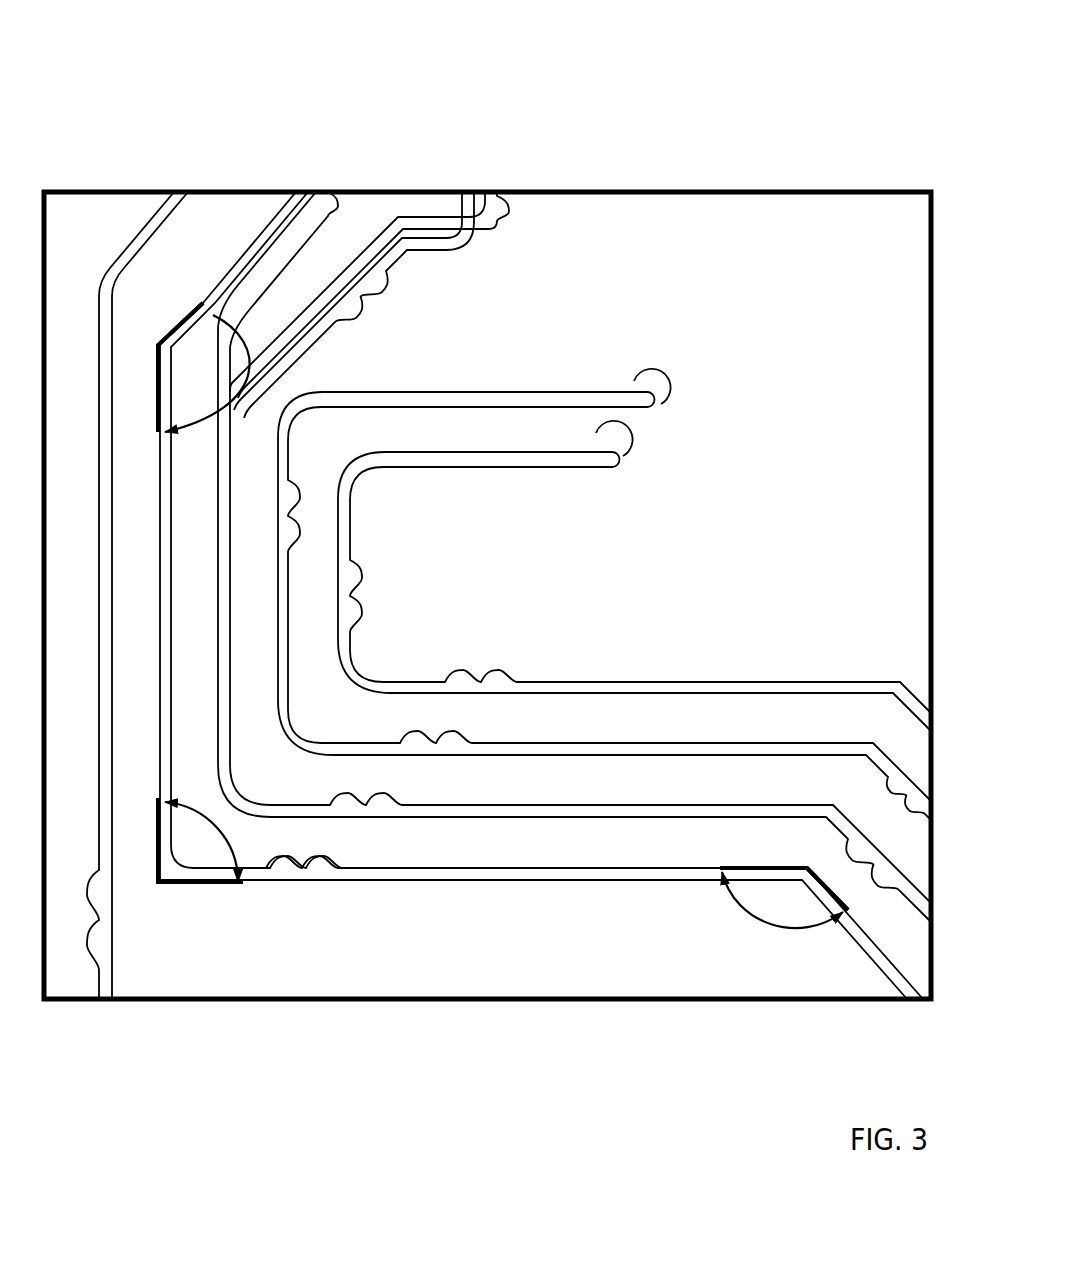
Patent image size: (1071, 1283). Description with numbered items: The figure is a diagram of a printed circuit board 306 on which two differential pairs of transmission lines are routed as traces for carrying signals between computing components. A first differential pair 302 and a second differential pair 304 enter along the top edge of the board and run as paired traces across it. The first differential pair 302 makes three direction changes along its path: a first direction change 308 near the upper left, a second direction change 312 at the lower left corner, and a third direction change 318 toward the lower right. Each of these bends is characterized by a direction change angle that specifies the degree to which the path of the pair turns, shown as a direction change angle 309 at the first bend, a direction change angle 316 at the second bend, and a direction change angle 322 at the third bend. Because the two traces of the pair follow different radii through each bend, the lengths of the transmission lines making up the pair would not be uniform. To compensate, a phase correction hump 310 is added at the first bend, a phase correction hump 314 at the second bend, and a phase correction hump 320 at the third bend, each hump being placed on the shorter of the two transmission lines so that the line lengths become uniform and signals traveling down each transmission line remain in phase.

The first differential pair 302 is at (318, 190).
The differential pair 304 is at (488, 190).
The printed circuit board 306 is at (758, 240).
The direction change 308 is at (162, 327).
The direction change angle 309 is at (247, 405).
The phase correction hump 310 is at (213, 313).
The direction change 312 is at (162, 910).
The phase correction hump 314 is at (298, 875).
The direction change angle 316 is at (227, 822).
The direction change 318 is at (797, 862).
The phase correction hump 320 is at (833, 935).
The direction change angle 322 is at (762, 930).